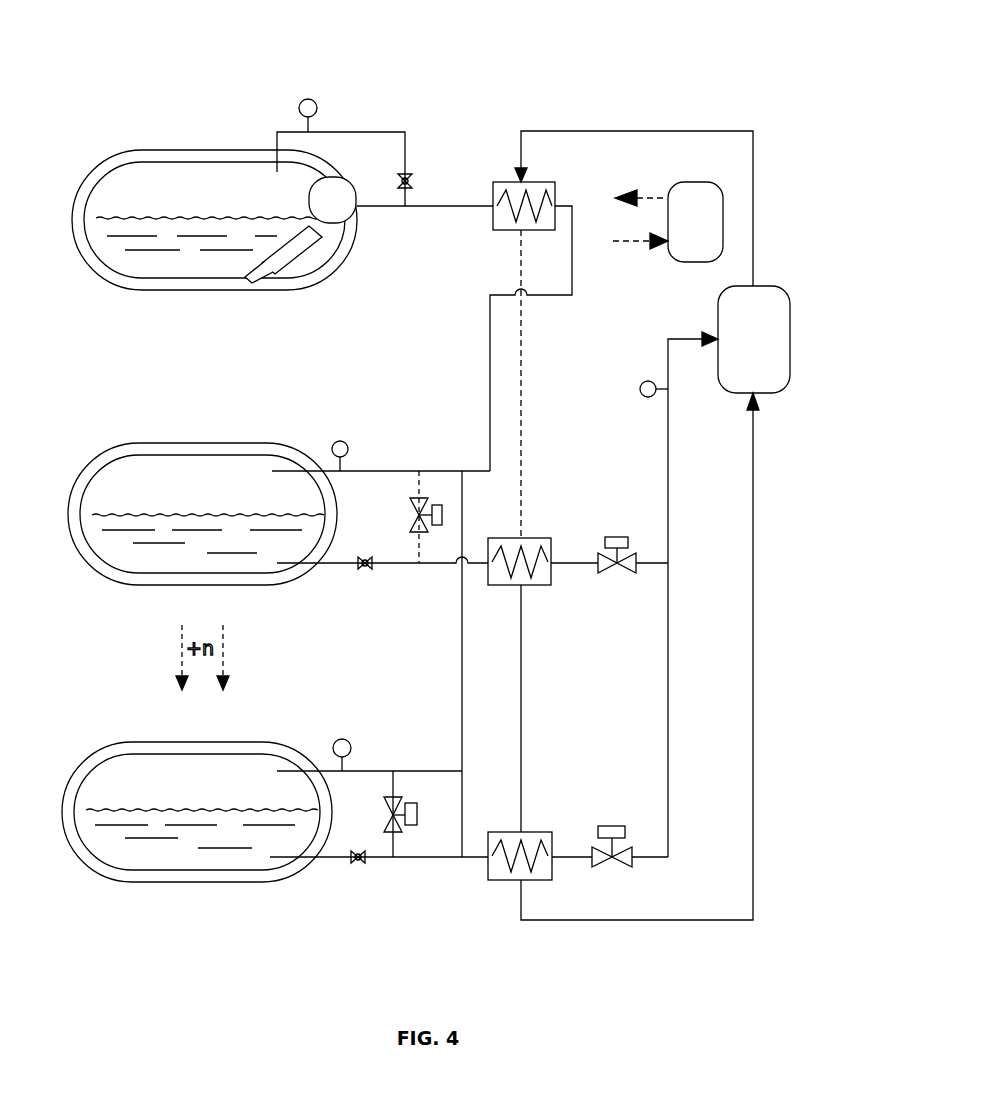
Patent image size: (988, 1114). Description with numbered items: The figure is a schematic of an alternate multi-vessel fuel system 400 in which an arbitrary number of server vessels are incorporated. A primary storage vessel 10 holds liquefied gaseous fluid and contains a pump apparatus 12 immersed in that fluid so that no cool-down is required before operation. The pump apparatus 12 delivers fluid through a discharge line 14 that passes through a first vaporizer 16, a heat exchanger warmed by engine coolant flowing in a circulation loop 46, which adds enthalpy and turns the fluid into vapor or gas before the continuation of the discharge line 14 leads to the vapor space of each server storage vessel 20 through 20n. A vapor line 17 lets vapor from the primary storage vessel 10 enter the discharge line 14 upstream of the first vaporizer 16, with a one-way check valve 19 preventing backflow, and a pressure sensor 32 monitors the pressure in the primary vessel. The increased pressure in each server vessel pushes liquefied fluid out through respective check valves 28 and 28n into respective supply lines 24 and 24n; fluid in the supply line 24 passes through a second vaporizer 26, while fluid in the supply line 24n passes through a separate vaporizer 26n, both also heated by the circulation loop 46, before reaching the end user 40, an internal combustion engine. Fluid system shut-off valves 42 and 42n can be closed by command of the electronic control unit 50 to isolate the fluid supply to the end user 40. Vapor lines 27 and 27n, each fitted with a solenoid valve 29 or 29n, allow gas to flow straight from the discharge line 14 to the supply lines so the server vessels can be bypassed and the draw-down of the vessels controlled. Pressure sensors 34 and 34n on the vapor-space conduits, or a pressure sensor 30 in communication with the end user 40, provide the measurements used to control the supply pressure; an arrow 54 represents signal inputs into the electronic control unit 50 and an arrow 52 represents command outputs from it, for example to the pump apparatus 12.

The multi-vessel fuel system 400 is at (98, 84).
The primary storage vessel 10 is at (120, 150).
The pump apparatus 12 is at (316, 237).
The discharge line 14 is at (432, 207).
The first vaporizer 16 is at (530, 210).
The vapor line 17 is at (368, 132).
The one-way check valve 19 is at (407, 174).
The server storage vessel 20 is at (118, 446).
The nth server storage vessel 20n is at (112, 742).
The supply line 24 is at (668, 452).
The supply line of nth server vessel 24n is at (462, 860).
The second vaporizer 26 is at (530, 562).
The separate vaporizer 26n is at (530, 856).
The vapor line 27 is at (420, 471).
The vapor line of nth server vessel 27n is at (393, 778).
The check valve 28 is at (365, 572).
The check valve of nth server vessel 28n is at (356, 864).
The valve 29 is at (410, 515).
The valve of nth vapor line 29n is at (430, 857).
The pressure sensor 30 is at (640, 390).
The pressure sensor 32 is at (305, 99).
The pressure sensor 34 is at (339, 441).
The pressure sensor of nth server vessel 34n is at (335, 741).
The end user 40 is at (742, 350).
The fluid system shut-off valve 42 is at (615, 537).
The fluid system shut-off valve of nth supply line 42n is at (612, 826).
The circulation loop 46 is at (753, 224).
The electronic control unit 50 is at (683, 233).
The signal outputs 52 is at (630, 195).
The signal inputs 54 is at (633, 245).